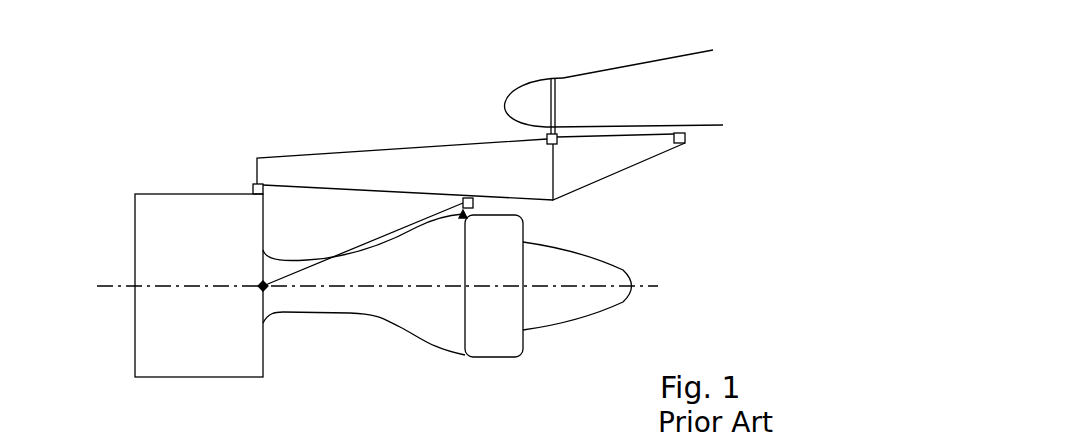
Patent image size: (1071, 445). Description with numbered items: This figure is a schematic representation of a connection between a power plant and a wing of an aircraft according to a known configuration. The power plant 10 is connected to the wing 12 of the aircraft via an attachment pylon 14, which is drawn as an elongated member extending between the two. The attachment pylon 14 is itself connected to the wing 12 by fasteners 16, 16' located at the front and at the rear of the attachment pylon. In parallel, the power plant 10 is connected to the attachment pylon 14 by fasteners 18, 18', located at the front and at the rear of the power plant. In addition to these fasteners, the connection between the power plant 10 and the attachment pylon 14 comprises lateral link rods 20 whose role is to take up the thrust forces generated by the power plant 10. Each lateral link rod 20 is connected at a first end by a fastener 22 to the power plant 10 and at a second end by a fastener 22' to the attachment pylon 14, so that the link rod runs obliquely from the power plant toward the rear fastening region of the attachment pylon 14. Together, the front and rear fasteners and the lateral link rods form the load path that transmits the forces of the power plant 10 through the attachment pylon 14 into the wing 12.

The power plant 10 is at (117, 262).
The wing 12 is at (653, 77).
The attachment pylon 14 is at (367, 172).
The fastener 16 is at (463, 114).
The fastener 16' is at (762, 158).
The fastener 18 is at (205, 151).
The fastener 18' is at (563, 215).
The lateral link rod 20 is at (377, 240).
The fastener 22 is at (279, 361).
The fastener 22' is at (480, 315).